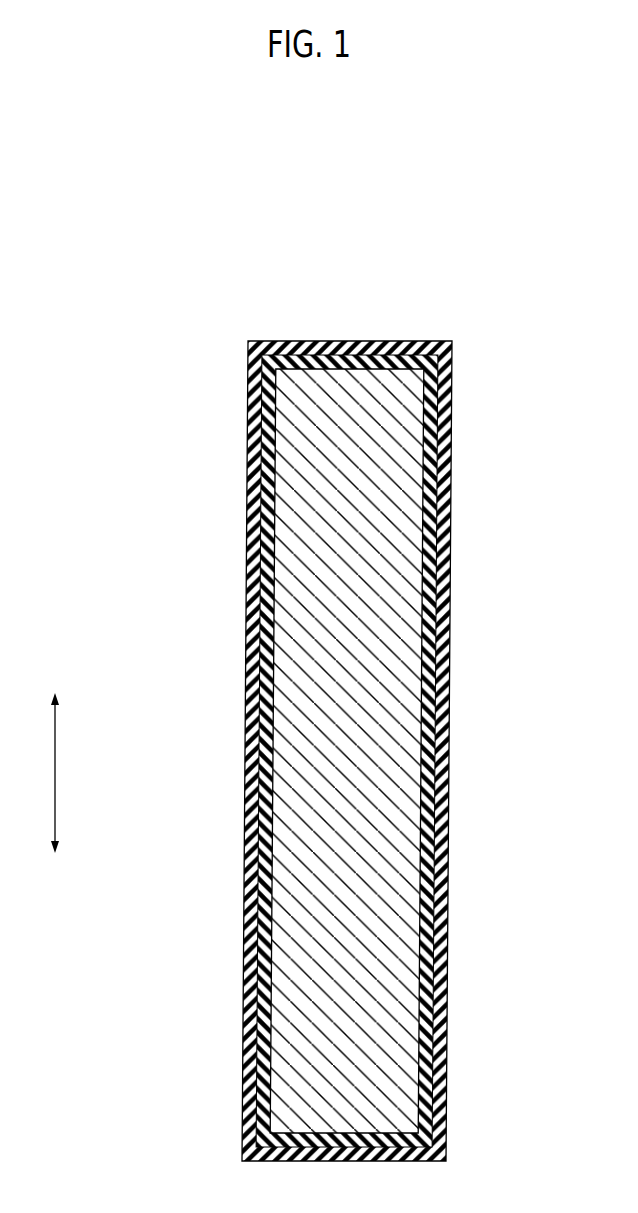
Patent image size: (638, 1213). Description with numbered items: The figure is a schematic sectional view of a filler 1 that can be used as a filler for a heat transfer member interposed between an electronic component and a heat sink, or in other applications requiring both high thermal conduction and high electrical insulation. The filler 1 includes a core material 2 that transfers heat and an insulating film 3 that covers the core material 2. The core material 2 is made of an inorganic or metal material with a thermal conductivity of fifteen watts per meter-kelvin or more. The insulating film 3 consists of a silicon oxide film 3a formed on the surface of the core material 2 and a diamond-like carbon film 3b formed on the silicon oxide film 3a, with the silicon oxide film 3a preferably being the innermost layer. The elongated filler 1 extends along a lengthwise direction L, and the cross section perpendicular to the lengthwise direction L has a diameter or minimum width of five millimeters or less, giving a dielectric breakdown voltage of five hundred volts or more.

The filler 1 is at (404, 692).
The core material 2 is at (400, 525).
The insulating film 3 is at (403, 751).
The silicon oxide film 3a is at (426, 648).
The diamond-like carbon film 3b is at (444, 687).
The lengthwise direction L is at (44, 773).